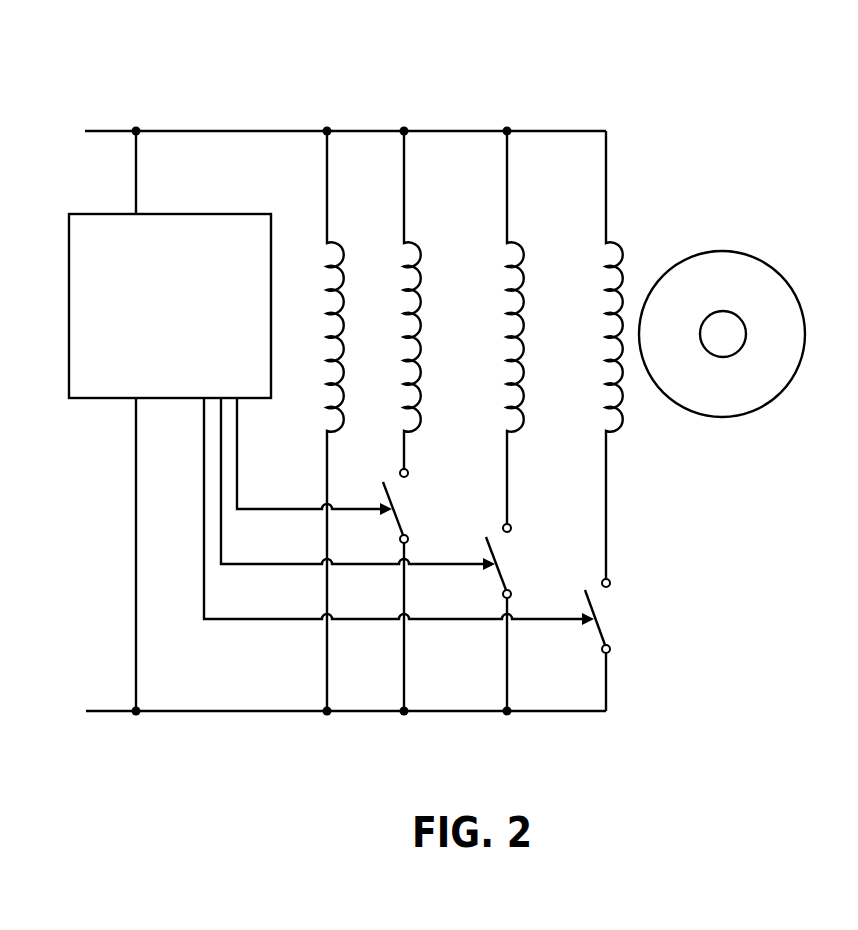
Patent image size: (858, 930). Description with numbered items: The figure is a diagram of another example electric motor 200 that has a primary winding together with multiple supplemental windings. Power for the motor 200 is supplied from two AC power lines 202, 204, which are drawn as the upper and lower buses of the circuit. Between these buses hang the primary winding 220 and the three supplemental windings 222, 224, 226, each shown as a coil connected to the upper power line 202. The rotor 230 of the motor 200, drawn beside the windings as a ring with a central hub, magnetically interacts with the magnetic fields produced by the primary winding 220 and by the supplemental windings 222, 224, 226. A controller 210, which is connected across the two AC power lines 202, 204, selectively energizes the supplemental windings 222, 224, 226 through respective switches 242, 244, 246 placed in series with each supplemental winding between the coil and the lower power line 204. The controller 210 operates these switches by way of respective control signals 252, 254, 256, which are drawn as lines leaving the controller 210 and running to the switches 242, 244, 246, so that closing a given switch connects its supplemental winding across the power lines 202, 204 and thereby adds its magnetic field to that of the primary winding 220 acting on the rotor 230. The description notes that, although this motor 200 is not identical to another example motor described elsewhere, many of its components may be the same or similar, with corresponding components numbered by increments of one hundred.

The electric motor 200 is at (686, 56).
The AC power line 202 is at (111, 130).
The AC power line 204 is at (111, 713).
The controller 210 is at (178, 214).
The primary winding 220 is at (333, 250).
The supplemental winding 222 is at (410, 250).
The supplemental winding 224 is at (512, 250).
The supplemental winding 226 is at (612, 250).
The rotor 230 is at (803, 305).
The switch 242 is at (400, 513).
The switch 244 is at (502, 573).
The switch 246 is at (600, 628).
The control signal 252 is at (297, 512).
The control signal 254 is at (297, 567).
The control signal 256 is at (297, 622).